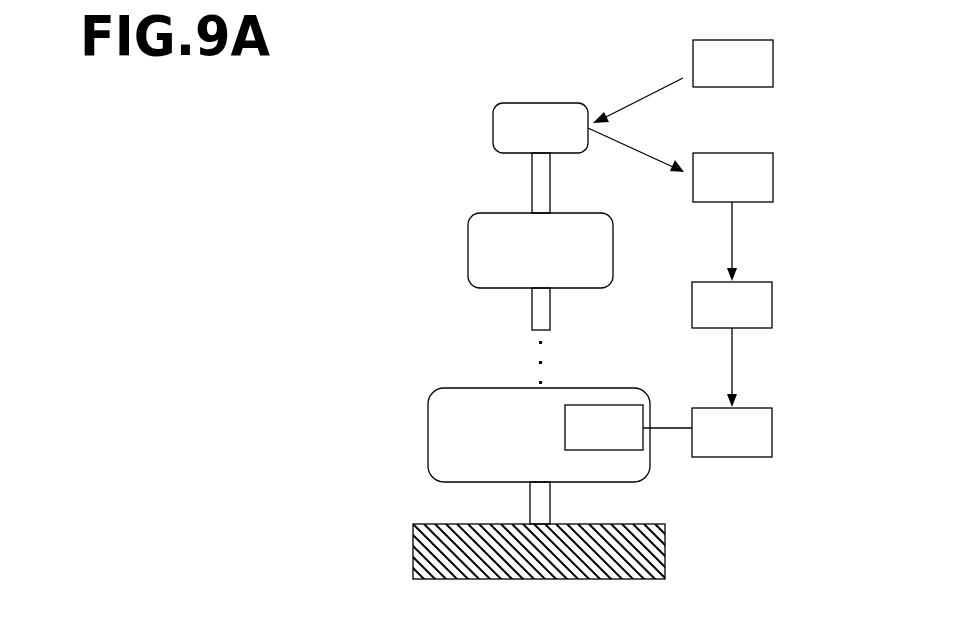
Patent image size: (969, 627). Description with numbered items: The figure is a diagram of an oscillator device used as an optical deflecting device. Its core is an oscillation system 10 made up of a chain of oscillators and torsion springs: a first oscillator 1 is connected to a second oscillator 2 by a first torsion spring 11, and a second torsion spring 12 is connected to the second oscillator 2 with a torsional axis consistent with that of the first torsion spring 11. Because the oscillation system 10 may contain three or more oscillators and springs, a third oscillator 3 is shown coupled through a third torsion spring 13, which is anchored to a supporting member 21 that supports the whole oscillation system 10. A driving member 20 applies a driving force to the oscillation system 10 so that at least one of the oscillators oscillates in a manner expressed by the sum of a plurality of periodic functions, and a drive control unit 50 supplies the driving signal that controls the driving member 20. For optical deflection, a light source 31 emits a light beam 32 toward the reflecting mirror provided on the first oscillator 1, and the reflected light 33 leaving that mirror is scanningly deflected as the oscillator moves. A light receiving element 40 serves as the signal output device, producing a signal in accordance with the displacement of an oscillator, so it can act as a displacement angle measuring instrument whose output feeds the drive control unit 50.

The first oscillator 1 is at (540, 128).
The second oscillator 2 is at (540, 250).
The third oscillator 3 is at (539, 435).
The oscillation system 10 is at (407, 235).
The first torsion spring 11 is at (532, 175).
The second torsion spring 12 is at (530, 312).
The third torsion spring 13 is at (528, 510).
The driving member 20 is at (668, 431).
The supporting member 21 is at (665, 553).
The light source 31 is at (733, 63).
The light beam 32 is at (629, 93).
The reflected light 33 is at (648, 152).
The light receiving element 40 is at (733, 177).
The drive control unit 50 is at (732, 305).